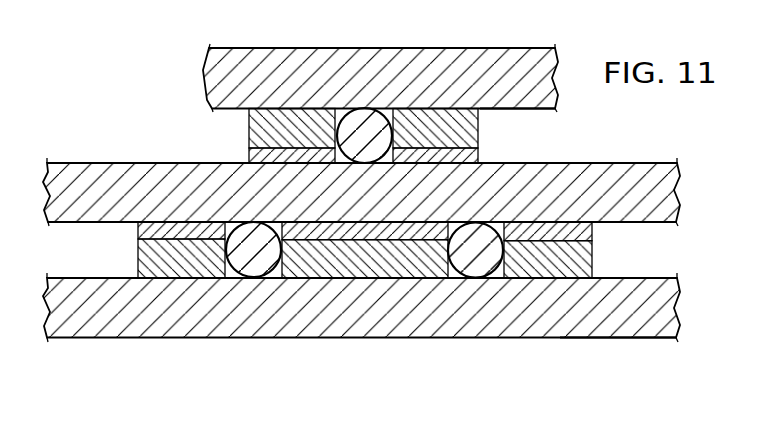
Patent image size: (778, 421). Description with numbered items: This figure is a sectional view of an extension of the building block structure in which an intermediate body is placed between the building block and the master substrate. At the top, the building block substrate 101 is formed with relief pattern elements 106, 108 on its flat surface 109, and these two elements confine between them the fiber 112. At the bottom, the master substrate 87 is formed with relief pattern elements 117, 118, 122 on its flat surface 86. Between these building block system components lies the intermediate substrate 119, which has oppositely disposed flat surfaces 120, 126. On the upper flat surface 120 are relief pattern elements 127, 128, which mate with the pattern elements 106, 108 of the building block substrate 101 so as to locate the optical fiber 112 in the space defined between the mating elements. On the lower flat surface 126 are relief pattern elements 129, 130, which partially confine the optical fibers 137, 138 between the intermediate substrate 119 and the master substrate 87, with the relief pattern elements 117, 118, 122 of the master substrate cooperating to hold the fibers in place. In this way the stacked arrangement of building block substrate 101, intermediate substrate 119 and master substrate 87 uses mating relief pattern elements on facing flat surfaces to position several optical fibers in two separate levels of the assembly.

The building block substrate 101 is at (491, 49).
The fiber 112 is at (389, 96).
The flat surface 109 is at (537, 110).
The relief pattern element 106 is at (249, 122).
The relief pattern element 127 is at (249, 151).
The relief pattern element 108 is at (480, 121).
The relief pattern element 128 is at (480, 152).
The flat surface 120 is at (572, 164).
The relief pattern element 129 is at (432, 206).
The intermediate substrate 119 is at (659, 178).
The flat surface 126 is at (667, 228).
The relief pattern element 118 is at (150, 256).
The relief pattern element 117 is at (360, 281).
The relief pattern element 130 is at (592, 234).
The relief pattern element 122 is at (592, 263).
The optical fiber 137 is at (267, 281).
The optical fiber 138 is at (490, 281).
The flat surface 86 is at (666, 281).
The master substrate 87 is at (647, 320).